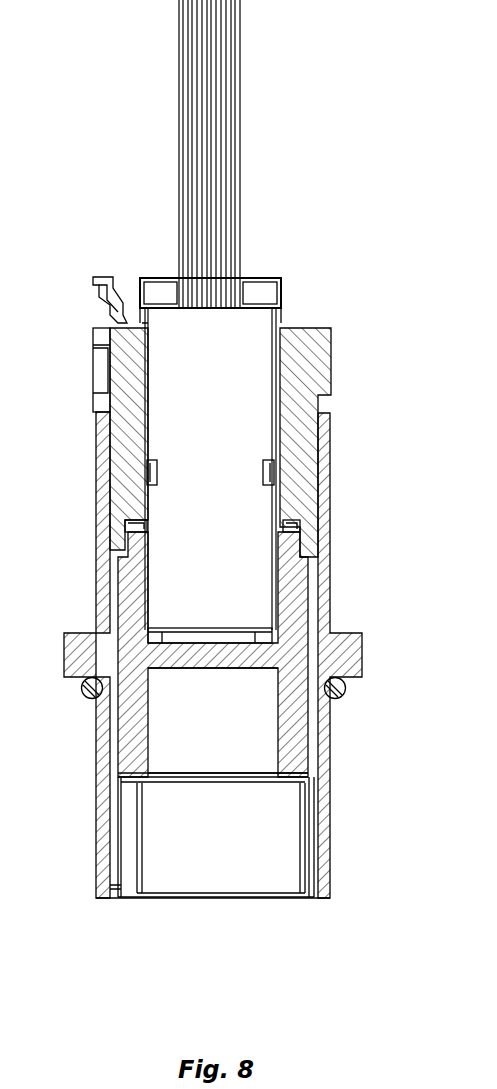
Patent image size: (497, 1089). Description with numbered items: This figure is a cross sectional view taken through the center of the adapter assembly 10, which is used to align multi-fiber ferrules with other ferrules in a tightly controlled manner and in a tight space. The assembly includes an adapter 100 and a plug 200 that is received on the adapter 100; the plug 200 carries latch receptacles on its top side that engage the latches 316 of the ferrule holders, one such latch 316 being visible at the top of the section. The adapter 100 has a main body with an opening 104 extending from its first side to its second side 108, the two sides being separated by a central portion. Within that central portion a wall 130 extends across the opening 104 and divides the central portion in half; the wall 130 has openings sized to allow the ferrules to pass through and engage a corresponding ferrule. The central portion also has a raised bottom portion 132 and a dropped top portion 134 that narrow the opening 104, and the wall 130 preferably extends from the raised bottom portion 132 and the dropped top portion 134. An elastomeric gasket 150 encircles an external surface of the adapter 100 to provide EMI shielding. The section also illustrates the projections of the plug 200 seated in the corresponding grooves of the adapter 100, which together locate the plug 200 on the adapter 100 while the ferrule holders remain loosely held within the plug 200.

The adapter assembly 10 is at (398, 264).
The latch 316 is at (110, 277).
The plug 200 is at (327, 356).
The adapter 100 is at (325, 532).
The opening 104 is at (312, 568).
The raised bottom portion 132 is at (305, 607).
The dropped top portion 134 is at (128, 583).
The elastomeric gasket 150 is at (347, 690).
The wall 130 is at (242, 668).
The second side 108 is at (316, 839).